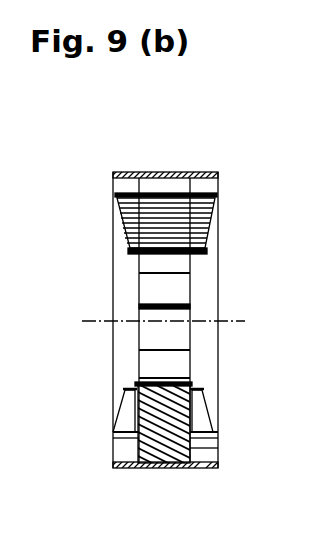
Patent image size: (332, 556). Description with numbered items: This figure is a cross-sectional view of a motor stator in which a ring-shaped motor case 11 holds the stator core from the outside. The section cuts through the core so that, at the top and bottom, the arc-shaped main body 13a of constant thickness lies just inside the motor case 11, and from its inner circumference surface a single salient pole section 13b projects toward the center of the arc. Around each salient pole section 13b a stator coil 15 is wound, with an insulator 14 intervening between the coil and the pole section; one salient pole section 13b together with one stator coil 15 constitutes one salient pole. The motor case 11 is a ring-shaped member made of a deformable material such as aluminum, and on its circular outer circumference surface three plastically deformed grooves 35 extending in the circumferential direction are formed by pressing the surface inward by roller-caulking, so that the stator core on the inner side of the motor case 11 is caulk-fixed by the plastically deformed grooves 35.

The motor case 11 is at (228, 172).
The arc-shaped main body 13a is at (220, 180).
The salient pole section 13b is at (220, 213).
The insulator 14 is at (210, 253).
The stator coil 15 is at (122, 232).
The plastically deformed grooves 35 is at (195, 172).